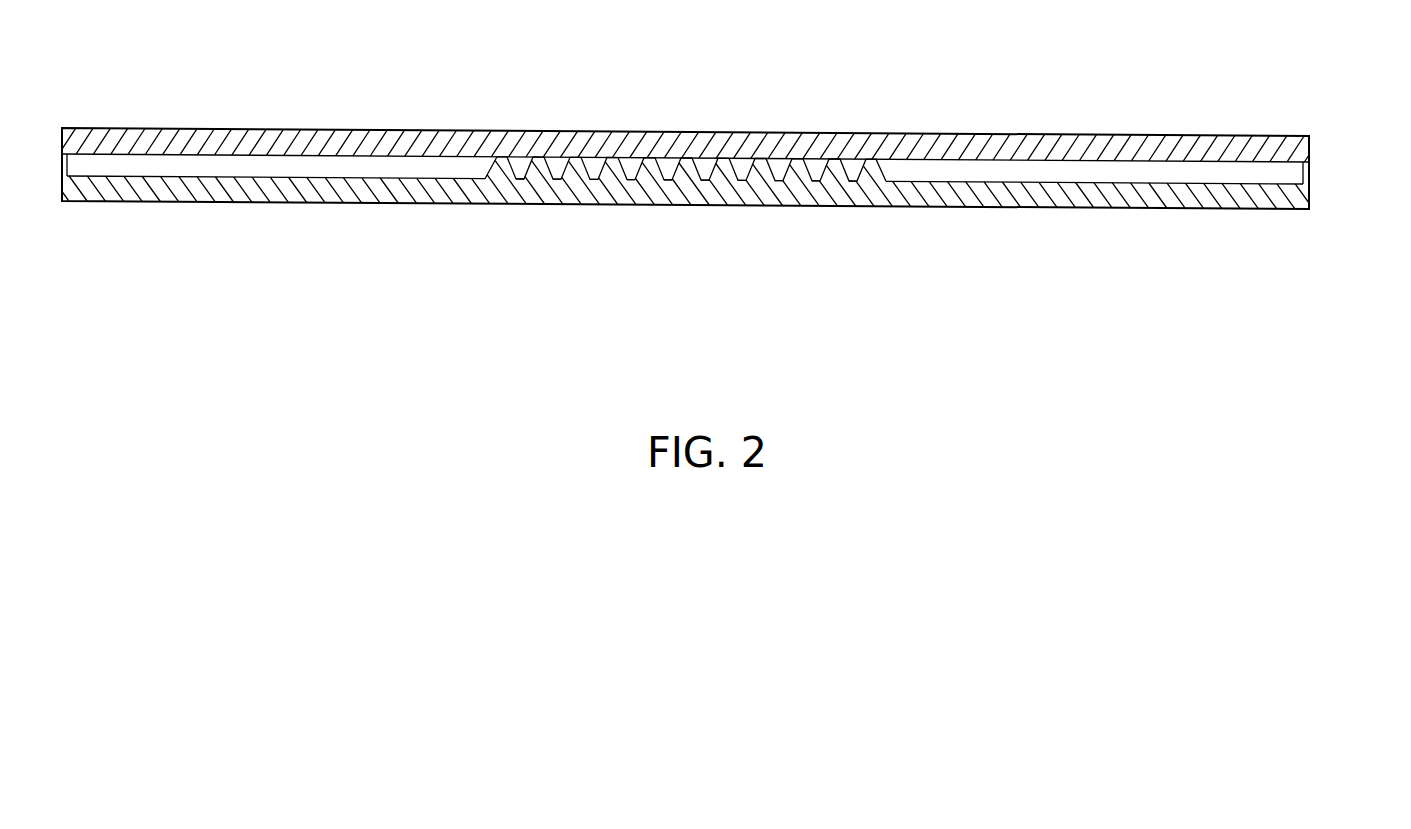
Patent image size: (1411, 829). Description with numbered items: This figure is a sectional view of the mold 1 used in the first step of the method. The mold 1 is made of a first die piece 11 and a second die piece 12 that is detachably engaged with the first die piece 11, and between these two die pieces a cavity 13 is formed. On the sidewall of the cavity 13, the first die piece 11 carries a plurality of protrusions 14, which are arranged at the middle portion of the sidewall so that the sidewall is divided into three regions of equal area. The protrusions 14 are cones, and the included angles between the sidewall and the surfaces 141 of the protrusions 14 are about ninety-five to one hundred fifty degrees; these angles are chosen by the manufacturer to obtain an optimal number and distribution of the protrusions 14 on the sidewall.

The heat dissipation plate assembly 1 is at (523, 178).
The first die piece 11 is at (232, 131).
The second die piece 12 is at (133, 208).
The cavity 13 is at (1273, 175).
The protrusions 14 is at (686, 170).
The surfaces of the protrusions 141 is at (636, 180).